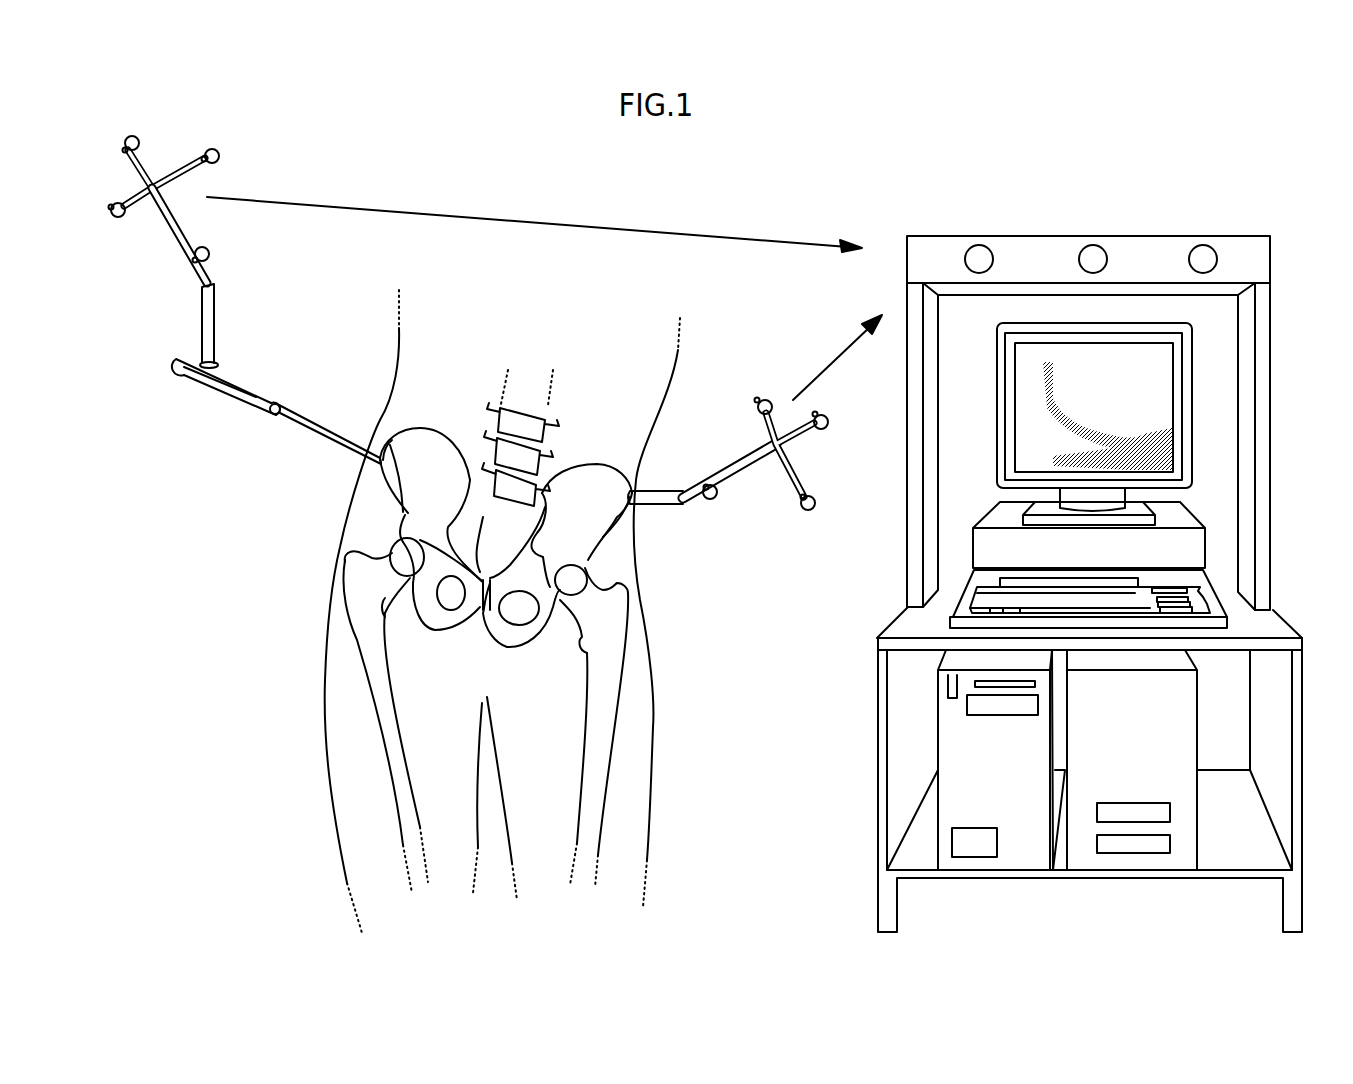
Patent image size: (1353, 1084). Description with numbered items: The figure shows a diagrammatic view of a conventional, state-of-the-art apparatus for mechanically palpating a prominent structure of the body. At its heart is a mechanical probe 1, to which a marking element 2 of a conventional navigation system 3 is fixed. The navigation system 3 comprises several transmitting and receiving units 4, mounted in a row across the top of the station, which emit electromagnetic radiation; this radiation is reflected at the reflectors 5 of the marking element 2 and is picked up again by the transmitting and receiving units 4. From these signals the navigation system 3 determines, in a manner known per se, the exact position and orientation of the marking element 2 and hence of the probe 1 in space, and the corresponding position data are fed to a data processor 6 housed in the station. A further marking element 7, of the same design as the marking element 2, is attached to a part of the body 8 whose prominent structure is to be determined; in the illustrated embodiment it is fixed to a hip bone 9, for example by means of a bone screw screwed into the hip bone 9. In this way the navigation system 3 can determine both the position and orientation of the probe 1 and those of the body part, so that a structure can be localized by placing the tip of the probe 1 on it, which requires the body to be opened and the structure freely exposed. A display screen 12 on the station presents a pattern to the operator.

The mechanical probe 1 is at (276, 424).
The marking element 2 is at (160, 225).
The navigation system 3 is at (1140, 243).
The transmitting and receiving units 4 is at (980, 252).
The reflectors 5 is at (130, 142).
The data processor 6 is at (953, 743).
The further marking element 7 is at (731, 469).
The body 8 is at (359, 667).
The hip bone 9 is at (422, 440).
The display screen 12 is at (1027, 433).